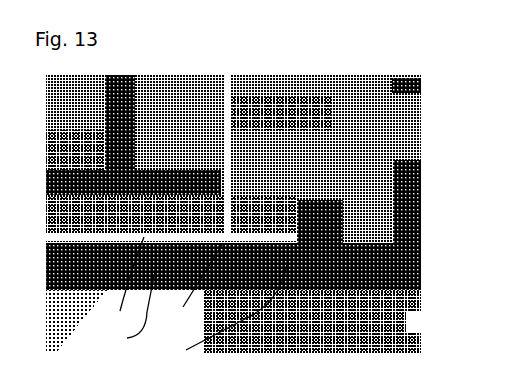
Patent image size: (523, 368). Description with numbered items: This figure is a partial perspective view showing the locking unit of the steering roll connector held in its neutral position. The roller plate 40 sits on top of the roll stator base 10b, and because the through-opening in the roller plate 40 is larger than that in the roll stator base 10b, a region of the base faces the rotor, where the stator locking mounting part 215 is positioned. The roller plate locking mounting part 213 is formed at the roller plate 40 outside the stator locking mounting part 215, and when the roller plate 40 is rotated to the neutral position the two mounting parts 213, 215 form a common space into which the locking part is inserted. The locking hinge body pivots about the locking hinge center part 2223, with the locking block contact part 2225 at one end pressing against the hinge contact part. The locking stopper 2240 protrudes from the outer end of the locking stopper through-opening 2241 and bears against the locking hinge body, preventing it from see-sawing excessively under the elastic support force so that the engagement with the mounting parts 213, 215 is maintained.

The roller plate 40 is at (144, 237).
The roll stator base 10b is at (156, 266).
The roller plate locking mounting part 213 is at (222, 245).
The stator locking mounting part 215 is at (288, 258).
The locking stopper 2240 is at (393, 76).
The locking block contact part 2225 is at (300, 122).
The locking hinge center part 2223 is at (376, 133).
The locking stopper through-opening 2241 is at (421, 174).